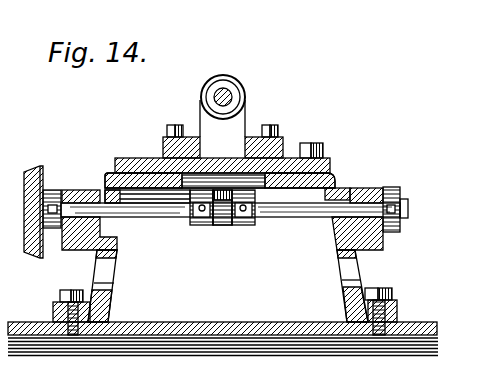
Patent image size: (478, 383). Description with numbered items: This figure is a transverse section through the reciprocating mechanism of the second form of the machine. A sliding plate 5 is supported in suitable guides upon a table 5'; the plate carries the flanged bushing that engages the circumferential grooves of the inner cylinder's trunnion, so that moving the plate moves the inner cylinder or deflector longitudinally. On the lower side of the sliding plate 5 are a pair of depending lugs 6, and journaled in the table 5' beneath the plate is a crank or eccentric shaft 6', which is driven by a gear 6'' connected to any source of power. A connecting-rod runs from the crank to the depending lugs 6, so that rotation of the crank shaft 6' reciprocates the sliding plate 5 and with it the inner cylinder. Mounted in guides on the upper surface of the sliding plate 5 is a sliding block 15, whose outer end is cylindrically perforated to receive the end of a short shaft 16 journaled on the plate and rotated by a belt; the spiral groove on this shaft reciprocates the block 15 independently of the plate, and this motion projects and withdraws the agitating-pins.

The sliding plate 5 is at (225, 228).
The table 5' is at (373, 193).
The depending lugs 6 is at (222, 222).
The crank or eccentric shaft 6' is at (230, 226).
The gear 6'' is at (35, 201).
The sliding block 15 is at (200, 120).
The short shaft 16 is at (233, 97).